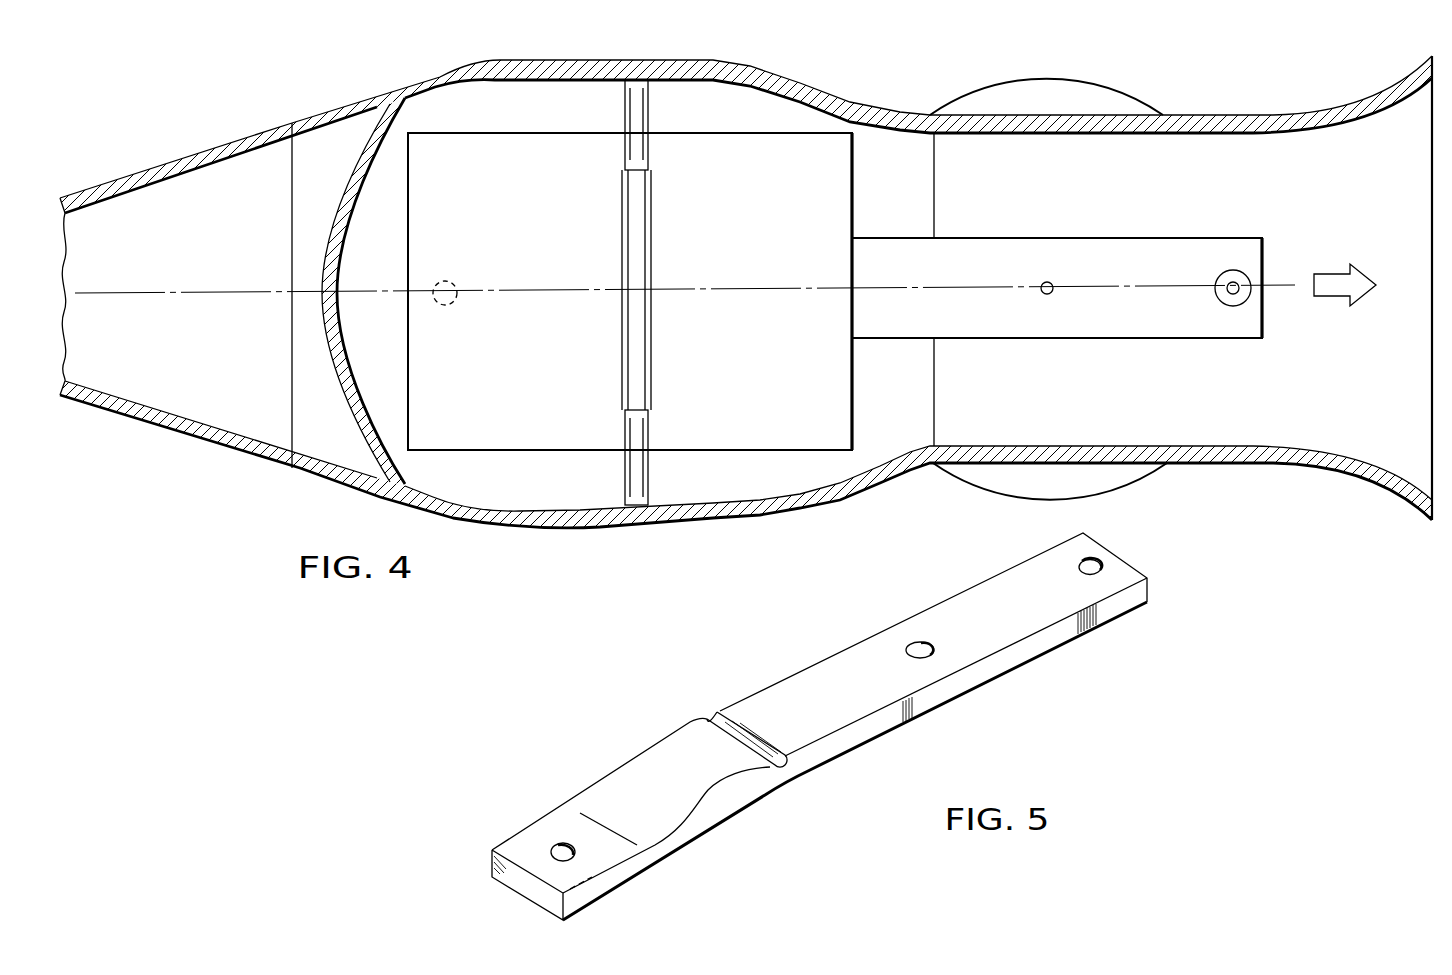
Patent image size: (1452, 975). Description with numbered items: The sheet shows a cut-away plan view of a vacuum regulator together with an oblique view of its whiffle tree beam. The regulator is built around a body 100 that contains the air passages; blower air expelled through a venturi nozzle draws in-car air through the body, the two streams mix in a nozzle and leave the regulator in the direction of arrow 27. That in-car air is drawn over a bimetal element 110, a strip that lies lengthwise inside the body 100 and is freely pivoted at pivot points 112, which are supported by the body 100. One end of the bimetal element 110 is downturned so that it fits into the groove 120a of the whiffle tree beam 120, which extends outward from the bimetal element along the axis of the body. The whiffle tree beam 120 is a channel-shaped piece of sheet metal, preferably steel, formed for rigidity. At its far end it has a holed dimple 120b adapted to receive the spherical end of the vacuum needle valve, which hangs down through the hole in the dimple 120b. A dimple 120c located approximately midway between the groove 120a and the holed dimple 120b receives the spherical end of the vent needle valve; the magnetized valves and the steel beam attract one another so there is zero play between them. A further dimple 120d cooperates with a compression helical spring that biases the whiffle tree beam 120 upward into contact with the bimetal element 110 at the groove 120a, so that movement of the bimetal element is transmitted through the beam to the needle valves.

In FIG. 4, the arrow 27 is at (1367, 285).
In FIG. 4, the body 100 is at (170, 430).
In FIG. 4, the bimetal element 110 is at (830, 143).
In FIG. 4, the pivot points 112 is at (655, 65).
In FIG. 4, the whiffle tree beam 120 is at (1042, 237).
In FIG. 5, the whiffle tree beam 120 is at (834, 655).
In FIG. 5, the groove 120a is at (712, 718).
In FIG. 5, the holed dimple 120b is at (1103, 573).
In FIG. 5, the dimple 120c is at (942, 653).
In FIG. 5, the dimple 120d is at (580, 857).